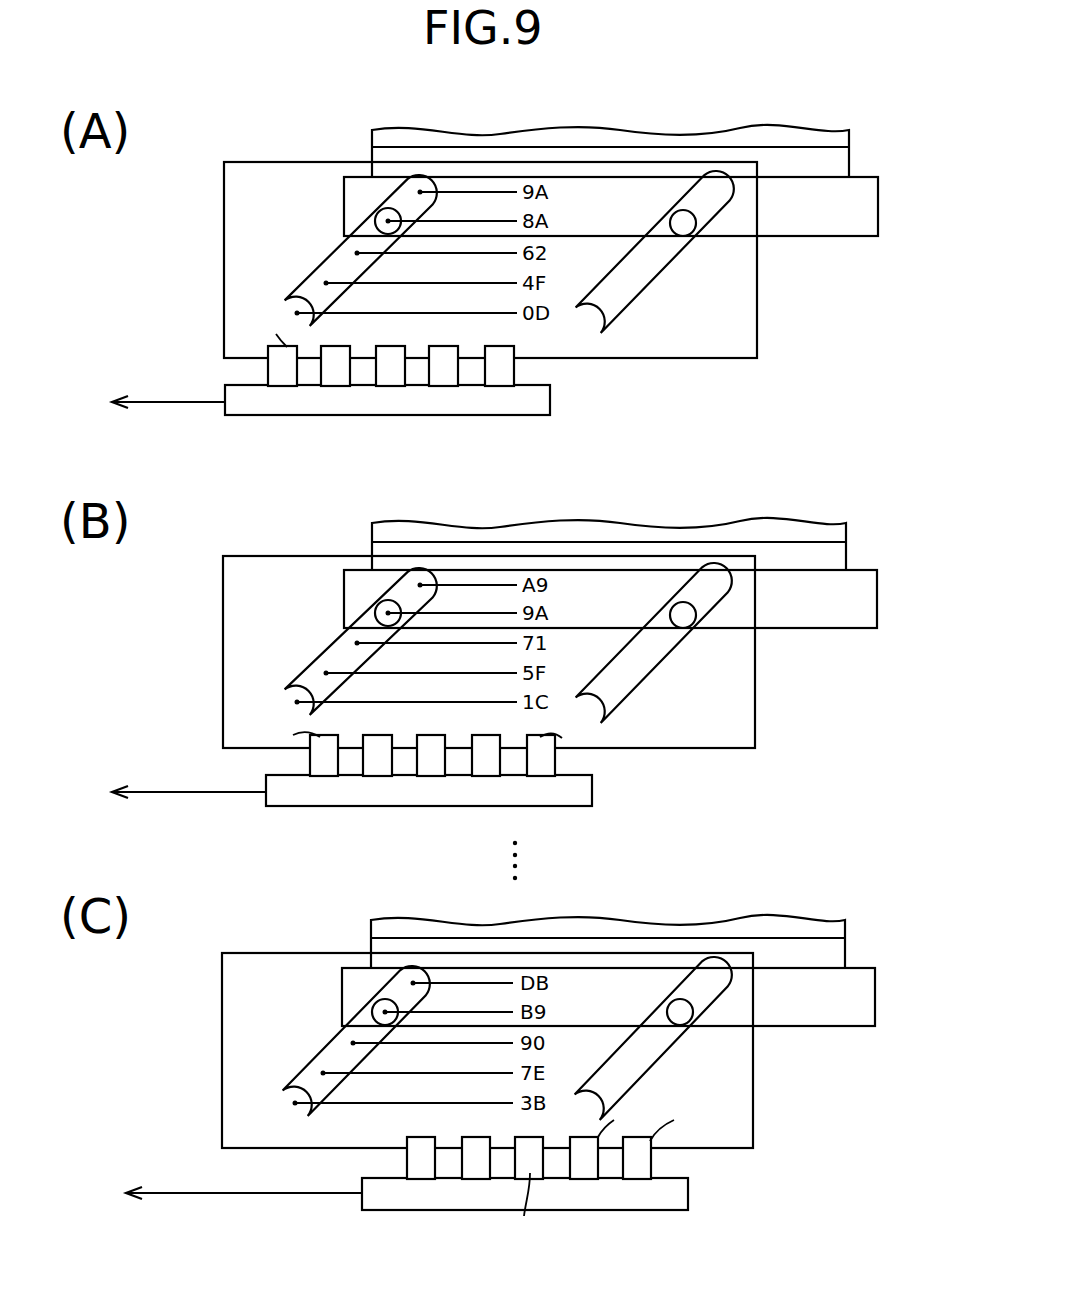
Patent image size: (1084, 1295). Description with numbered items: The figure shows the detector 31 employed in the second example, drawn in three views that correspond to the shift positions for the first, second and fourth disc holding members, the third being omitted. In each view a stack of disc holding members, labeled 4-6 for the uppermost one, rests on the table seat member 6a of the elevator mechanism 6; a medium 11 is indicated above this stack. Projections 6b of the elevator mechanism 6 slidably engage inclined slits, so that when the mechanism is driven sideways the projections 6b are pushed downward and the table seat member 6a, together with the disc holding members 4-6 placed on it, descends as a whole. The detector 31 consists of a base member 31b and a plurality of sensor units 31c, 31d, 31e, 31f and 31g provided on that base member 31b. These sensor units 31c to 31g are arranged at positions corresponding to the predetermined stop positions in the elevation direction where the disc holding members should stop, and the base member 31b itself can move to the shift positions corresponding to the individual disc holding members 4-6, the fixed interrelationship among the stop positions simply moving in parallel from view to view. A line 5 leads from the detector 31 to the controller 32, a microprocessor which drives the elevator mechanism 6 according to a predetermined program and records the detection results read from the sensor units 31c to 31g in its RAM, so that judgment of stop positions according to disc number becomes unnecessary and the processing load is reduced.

The sheet / recording medium 11 is at (393, 119).
The disc holding member 4-6 is at (849, 151).
The elevator mechanism 6 is at (776, 292).
The table seat member 6a is at (833, 234).
The projection 6b is at (385, 222).
The detector 31 is at (473, 785).
The base member 31b is at (550, 403).
The sensor unit 31c is at (482, 797).
The sensor unit 31d is at (445, 380).
The sensor unit 31e is at (390, 380).
The sensor unit 31f is at (335, 380).
The sensor unit 31g is at (283, 380).
The signal line to 32 5 is at (147, 411).
The controller 32 is at (144, 823).